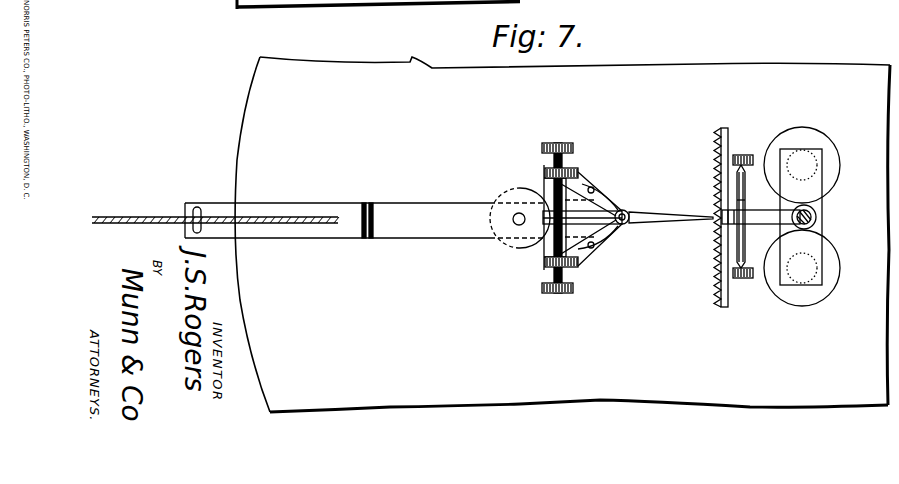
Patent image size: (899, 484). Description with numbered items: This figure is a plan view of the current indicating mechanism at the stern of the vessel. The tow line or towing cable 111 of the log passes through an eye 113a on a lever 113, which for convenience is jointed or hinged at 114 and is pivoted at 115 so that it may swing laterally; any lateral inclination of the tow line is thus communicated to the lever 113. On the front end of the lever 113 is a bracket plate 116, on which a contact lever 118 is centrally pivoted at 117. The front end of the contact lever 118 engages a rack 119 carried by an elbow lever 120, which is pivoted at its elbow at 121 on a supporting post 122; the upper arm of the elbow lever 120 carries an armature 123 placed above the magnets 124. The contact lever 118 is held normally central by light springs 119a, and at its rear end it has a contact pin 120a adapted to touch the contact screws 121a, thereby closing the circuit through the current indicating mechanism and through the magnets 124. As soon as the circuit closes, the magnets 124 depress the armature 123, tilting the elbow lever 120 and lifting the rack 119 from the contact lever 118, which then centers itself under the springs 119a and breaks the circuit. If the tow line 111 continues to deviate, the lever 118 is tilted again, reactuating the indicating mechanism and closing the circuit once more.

The towing cable 111 is at (140, 209).
The lever 113 is at (303, 207).
The eye 113a is at (198, 207).
The joint 114 is at (366, 205).
The pivot 115 is at (516, 225).
The bracket plate 116 is at (612, 200).
The pivot 117 is at (624, 227).
The contact lever 118 is at (678, 216).
The rack 119 is at (713, 157).
The light springs 119a is at (590, 194).
The elbow lever 120 is at (769, 217).
The contact pin 120a is at (548, 200).
The pivot 121 is at (752, 172).
The contact screws 121a is at (567, 133).
The supporting post 122 is at (736, 155).
The armature 123 is at (817, 182).
The magnets 124 is at (836, 250).